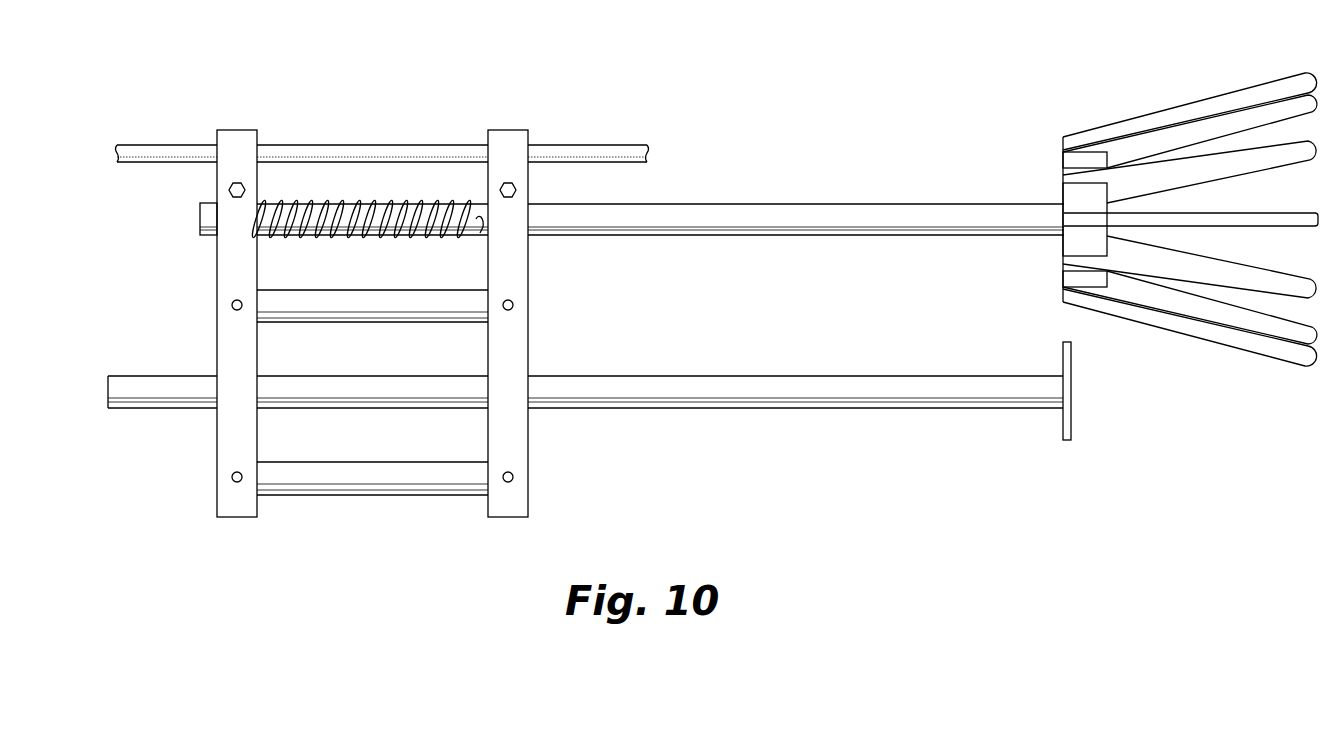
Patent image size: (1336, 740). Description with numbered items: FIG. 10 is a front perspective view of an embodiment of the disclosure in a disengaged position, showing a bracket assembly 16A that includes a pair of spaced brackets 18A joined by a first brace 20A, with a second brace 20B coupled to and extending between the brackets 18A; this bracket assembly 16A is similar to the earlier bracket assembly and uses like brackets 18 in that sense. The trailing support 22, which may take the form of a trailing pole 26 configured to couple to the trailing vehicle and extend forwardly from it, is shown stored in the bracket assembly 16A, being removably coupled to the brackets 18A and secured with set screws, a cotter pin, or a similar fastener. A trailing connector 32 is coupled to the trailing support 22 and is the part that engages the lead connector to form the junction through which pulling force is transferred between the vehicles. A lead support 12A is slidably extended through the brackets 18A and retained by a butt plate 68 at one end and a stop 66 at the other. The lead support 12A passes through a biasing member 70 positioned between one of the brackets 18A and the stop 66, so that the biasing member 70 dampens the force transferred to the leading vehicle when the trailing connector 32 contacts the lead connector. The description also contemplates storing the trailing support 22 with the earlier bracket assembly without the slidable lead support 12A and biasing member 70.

The lead support 12A is at (841, 204).
The bracket assembly 16A is at (210, 478).
The first plate 18 is at (237, 140).
The brackets 18A is at (500, 143).
The first brace 20A is at (468, 304).
The second brace 20B is at (360, 475).
The trailing support 22 is at (712, 385).
The trailing pole 26 is at (740, 217).
The trailing connector 32 is at (1068, 412).
The stop 66 is at (483, 229).
The butt plate 68 is at (205, 212).
The biasing member 70 is at (420, 200).